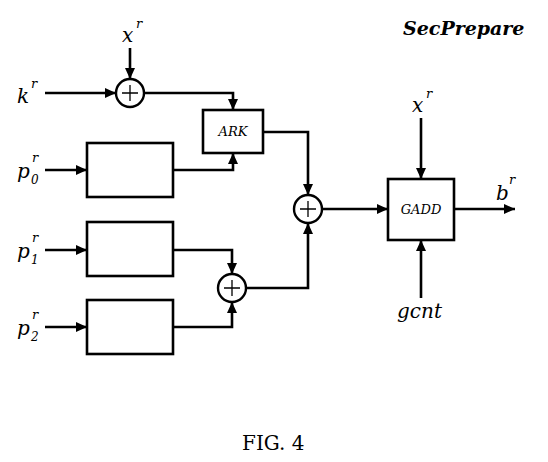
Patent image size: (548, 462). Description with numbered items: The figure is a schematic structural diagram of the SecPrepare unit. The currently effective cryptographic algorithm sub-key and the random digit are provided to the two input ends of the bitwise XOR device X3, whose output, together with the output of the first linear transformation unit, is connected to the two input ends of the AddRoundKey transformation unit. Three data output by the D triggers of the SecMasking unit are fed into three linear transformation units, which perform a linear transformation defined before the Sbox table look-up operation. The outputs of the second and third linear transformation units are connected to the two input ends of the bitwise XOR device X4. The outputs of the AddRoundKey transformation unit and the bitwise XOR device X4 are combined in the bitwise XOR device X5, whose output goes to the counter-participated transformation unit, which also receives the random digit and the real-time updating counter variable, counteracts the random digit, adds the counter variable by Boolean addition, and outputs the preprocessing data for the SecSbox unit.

The bitwise XOR device X3 is at (130, 104).
The bitwise XOR device X4 is at (217, 288).
The bitwise XOR device X5 is at (292, 209).